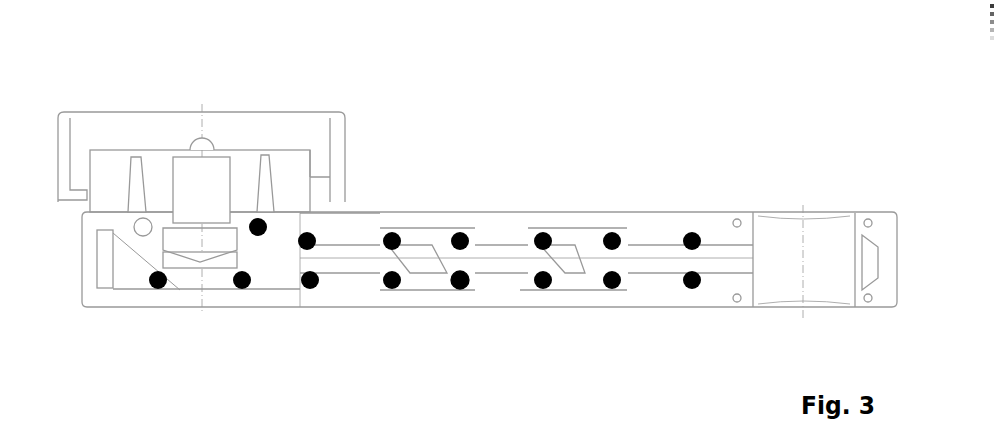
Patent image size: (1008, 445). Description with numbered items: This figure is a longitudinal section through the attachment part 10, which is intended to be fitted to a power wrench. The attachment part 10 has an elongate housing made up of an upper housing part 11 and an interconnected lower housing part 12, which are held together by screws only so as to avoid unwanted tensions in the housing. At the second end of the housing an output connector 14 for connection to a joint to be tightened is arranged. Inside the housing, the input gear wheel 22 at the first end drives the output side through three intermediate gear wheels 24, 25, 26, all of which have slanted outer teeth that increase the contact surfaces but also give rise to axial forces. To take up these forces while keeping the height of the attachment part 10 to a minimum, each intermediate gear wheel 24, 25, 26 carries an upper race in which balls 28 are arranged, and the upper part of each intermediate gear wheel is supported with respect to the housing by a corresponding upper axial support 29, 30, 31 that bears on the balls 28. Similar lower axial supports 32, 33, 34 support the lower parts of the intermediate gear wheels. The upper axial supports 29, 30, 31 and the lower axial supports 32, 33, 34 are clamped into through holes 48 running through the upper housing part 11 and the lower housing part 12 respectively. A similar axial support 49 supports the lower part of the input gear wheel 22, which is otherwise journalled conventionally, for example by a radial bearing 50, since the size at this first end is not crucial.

The attachment part 10 is at (580, 65).
The upper housing part 11 is at (547, 216).
The lower housing part 12 is at (285, 302).
The output connector 14 is at (850, 258).
The input gear wheel 22 is at (157, 198).
The intermediate gear wheel 24 is at (408, 258).
The intermediate gear wheel 25 is at (432, 283).
The intermediate gear wheel 26 is at (710, 258).
The balls 28 is at (605, 216).
The upper axial support 29 is at (362, 216).
The upper axial support 30 is at (503, 223).
The upper axial support 31 is at (662, 216).
The lower axial support 32 is at (347, 305).
The lower axial support 33 is at (490, 298).
The lower axial support 34 is at (650, 304).
The through holes 48 is at (522, 297).
The axial support 49 is at (192, 302).
The radial bearing 50 is at (260, 182).